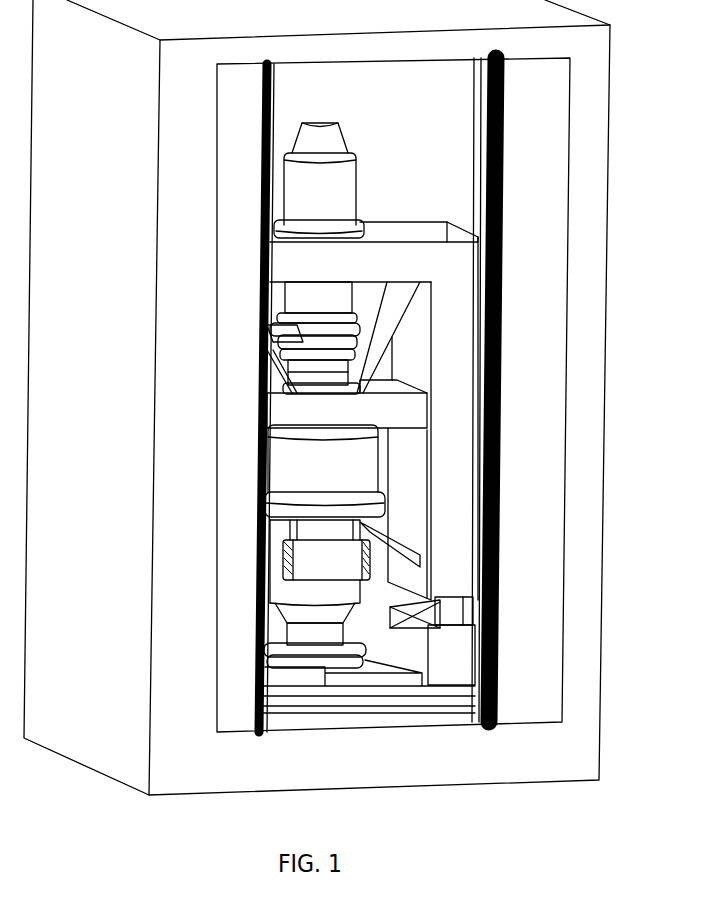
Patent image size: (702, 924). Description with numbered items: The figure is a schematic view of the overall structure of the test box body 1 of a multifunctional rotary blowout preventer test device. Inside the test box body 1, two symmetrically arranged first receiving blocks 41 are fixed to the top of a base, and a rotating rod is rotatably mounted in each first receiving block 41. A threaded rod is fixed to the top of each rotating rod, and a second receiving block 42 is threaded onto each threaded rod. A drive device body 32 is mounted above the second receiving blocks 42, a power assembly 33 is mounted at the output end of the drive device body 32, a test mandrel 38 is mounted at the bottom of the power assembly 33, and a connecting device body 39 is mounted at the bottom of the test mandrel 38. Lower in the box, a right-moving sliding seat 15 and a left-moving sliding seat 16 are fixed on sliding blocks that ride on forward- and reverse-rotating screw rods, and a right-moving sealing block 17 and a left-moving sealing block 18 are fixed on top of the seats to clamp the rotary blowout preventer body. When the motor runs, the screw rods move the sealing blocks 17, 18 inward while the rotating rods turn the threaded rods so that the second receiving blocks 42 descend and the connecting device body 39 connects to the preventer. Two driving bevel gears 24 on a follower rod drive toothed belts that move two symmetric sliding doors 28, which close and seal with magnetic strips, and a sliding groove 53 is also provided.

The test box body 1 is at (58, 753).
The right-moving sliding seat 15 is at (300, 687).
The left-moving sliding seat 16 is at (395, 683).
The right-moving sealing block 17 is at (292, 648).
The left-moving sealing block 18 is at (355, 648).
The driving bevel gear 24 is at (398, 325).
The sliding door 28 is at (508, 712).
The drive device body 32 is at (337, 197).
The power assembly 33 is at (335, 298).
The test mandrel 38 is at (397, 381).
The connecting device body 39 is at (338, 462).
The first receiving block 41 is at (448, 648).
The second receiving block 42 is at (457, 503).
The sliding groove 53 is at (392, 720).